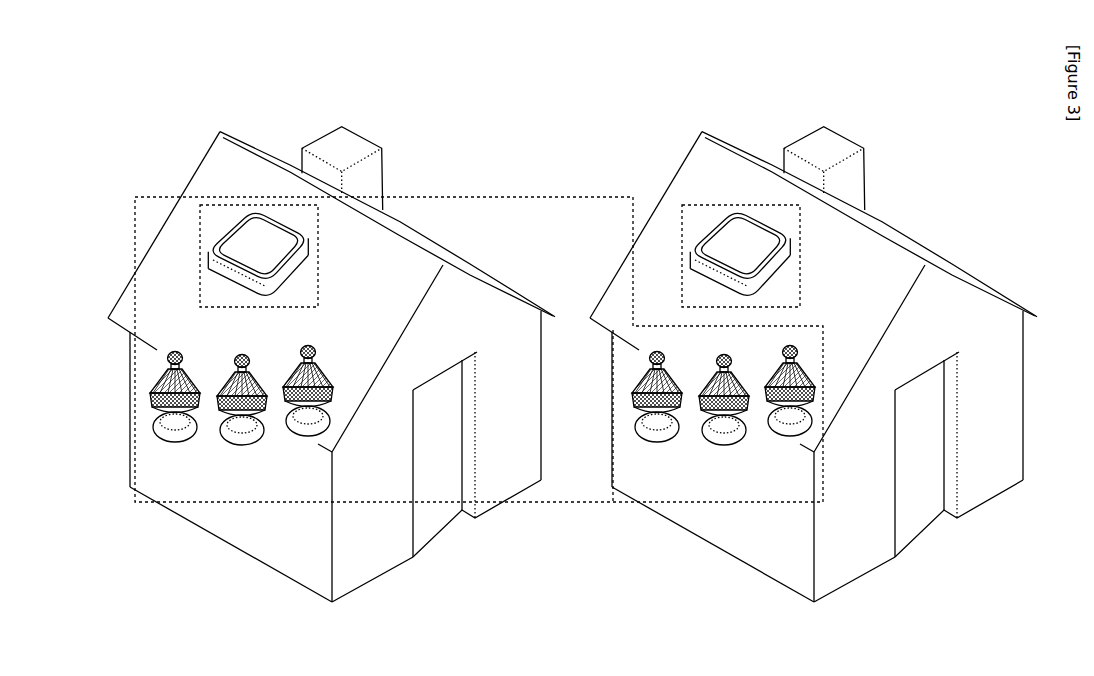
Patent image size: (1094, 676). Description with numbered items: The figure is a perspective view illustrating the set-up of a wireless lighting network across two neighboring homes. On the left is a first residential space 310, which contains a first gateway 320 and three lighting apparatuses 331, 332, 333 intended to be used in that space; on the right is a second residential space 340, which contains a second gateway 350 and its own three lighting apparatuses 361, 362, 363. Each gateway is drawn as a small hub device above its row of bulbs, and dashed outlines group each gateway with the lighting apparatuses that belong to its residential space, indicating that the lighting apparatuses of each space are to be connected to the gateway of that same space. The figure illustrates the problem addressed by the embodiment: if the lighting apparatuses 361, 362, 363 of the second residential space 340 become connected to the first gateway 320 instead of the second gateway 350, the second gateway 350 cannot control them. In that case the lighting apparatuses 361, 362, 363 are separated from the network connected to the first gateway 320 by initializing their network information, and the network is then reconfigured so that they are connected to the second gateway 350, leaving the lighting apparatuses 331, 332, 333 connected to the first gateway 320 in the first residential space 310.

The first residential space 310 is at (331, 351).
The first gateway 320 is at (302, 267).
The lighting apparatus 331 is at (170, 442).
The lighting apparatus 332 is at (237, 446).
The lighting apparatus 333 is at (303, 436).
The second residential space 340 is at (813, 351).
The second gateway 350 is at (784, 267).
The lighting apparatus 361 is at (652, 442).
The lighting apparatus 362 is at (719, 446).
The lighting apparatus 363 is at (785, 436).